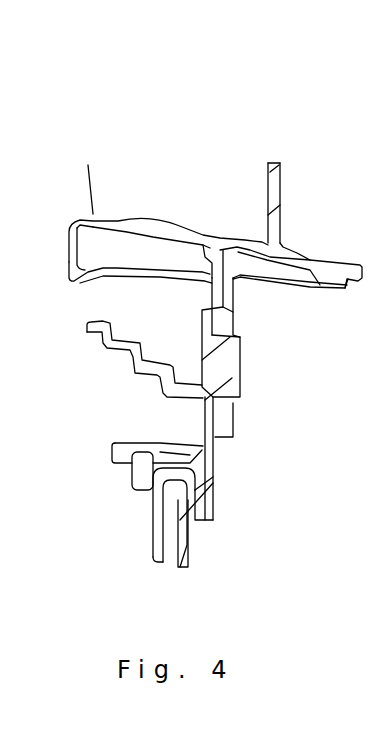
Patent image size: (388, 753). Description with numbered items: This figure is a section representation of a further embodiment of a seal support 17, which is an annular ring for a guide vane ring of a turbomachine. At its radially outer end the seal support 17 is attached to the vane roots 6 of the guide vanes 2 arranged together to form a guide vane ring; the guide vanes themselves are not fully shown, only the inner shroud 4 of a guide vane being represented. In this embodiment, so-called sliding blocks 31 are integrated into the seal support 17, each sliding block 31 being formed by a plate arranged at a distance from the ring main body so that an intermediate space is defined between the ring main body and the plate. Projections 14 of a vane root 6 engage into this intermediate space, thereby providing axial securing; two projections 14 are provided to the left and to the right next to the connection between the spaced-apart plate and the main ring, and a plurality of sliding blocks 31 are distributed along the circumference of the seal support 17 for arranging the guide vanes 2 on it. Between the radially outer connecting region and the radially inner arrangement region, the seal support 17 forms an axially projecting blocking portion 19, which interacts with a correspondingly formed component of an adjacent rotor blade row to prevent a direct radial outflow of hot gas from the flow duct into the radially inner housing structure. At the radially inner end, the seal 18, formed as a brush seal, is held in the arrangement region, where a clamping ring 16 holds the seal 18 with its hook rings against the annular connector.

The guide vane 2 is at (190, 178).
The inner shroud 4 is at (322, 267).
The vane root 6 is at (223, 308).
The sliding block 31 is at (232, 368).
The projection 14 is at (233, 415).
The seal support 17 is at (213, 460).
The blocking portion 19 is at (132, 367).
The clamping ring 16 is at (157, 467).
The seal 18 is at (185, 497).